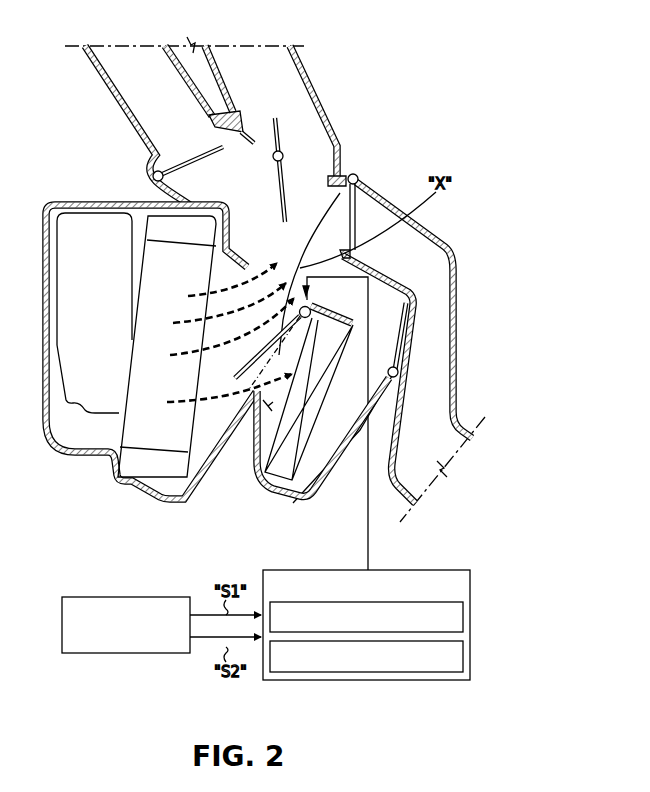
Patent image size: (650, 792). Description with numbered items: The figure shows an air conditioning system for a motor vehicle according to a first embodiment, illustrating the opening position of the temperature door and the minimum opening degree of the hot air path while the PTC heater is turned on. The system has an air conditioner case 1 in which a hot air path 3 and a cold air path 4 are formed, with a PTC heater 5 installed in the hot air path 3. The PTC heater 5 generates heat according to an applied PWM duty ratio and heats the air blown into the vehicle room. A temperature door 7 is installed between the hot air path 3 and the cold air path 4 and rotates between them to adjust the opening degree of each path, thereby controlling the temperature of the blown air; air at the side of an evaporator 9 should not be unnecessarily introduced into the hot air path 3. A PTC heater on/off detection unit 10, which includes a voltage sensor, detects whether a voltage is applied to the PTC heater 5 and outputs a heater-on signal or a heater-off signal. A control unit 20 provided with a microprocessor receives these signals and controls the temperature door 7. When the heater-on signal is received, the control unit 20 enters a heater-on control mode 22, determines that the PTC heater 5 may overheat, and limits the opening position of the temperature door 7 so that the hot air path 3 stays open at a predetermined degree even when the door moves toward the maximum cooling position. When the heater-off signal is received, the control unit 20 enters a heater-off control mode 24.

The air conditioner case 1 is at (47, 437).
The hot air path 3 is at (263, 402).
The cold air path 4 is at (355, 177).
The PTC heater 5 is at (285, 478).
The temperature door 7 is at (243, 373).
The evaporator 9 is at (137, 437).
The PTC heater on/off detection unit 10 is at (130, 655).
The control unit 20 is at (472, 588).
The heater-on control mode 22 is at (466, 616).
The heater-off control mode 24 is at (466, 656).